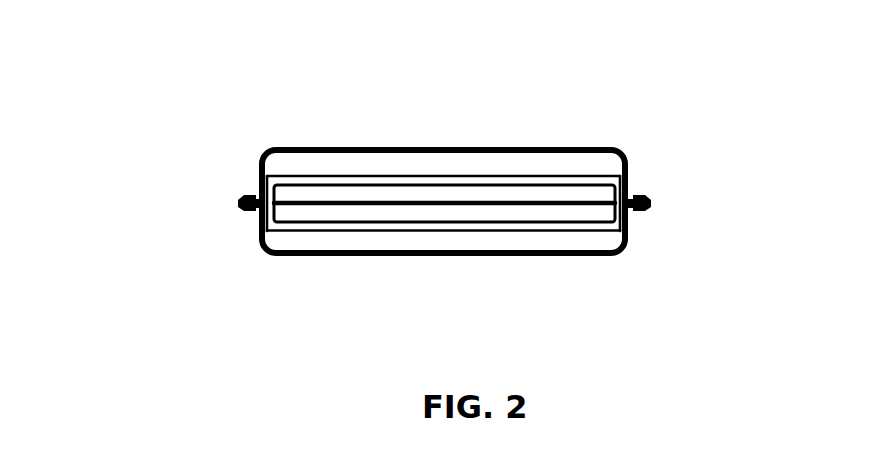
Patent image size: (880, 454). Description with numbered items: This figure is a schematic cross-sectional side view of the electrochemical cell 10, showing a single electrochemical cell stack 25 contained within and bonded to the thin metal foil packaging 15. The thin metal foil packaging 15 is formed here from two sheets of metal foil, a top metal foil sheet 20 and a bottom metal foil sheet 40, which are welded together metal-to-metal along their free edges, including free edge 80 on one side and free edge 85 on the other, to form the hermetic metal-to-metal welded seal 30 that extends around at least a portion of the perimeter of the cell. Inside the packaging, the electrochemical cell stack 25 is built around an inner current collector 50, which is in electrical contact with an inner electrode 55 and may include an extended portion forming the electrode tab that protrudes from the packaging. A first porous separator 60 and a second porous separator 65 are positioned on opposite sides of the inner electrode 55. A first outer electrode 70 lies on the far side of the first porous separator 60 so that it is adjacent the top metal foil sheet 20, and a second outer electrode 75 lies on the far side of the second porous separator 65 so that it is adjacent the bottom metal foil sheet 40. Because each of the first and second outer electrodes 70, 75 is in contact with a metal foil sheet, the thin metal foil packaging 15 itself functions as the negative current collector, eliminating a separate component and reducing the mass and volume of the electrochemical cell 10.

The electrochemical cell 10 is at (125, 123).
The thin metal foil packaging 15 is at (473, 250).
The top metal foil sheet 20 is at (464, 147).
The electrochemical cell stack 25 is at (404, 162).
The hermetic metal-to-metal welded seal 30 is at (248, 195).
The bottom metal foil sheet 40 is at (455, 256).
The inner current collector 50 is at (582, 198).
The inner electrode 55 is at (532, 213).
The first porous separator 60 is at (342, 178).
The second porous separator 65 is at (341, 229).
The first outer electrode 70 is at (310, 163).
The second outer electrode 75 is at (307, 242).
The free edge 80 is at (240, 203).
The free edge 85 is at (655, 202).